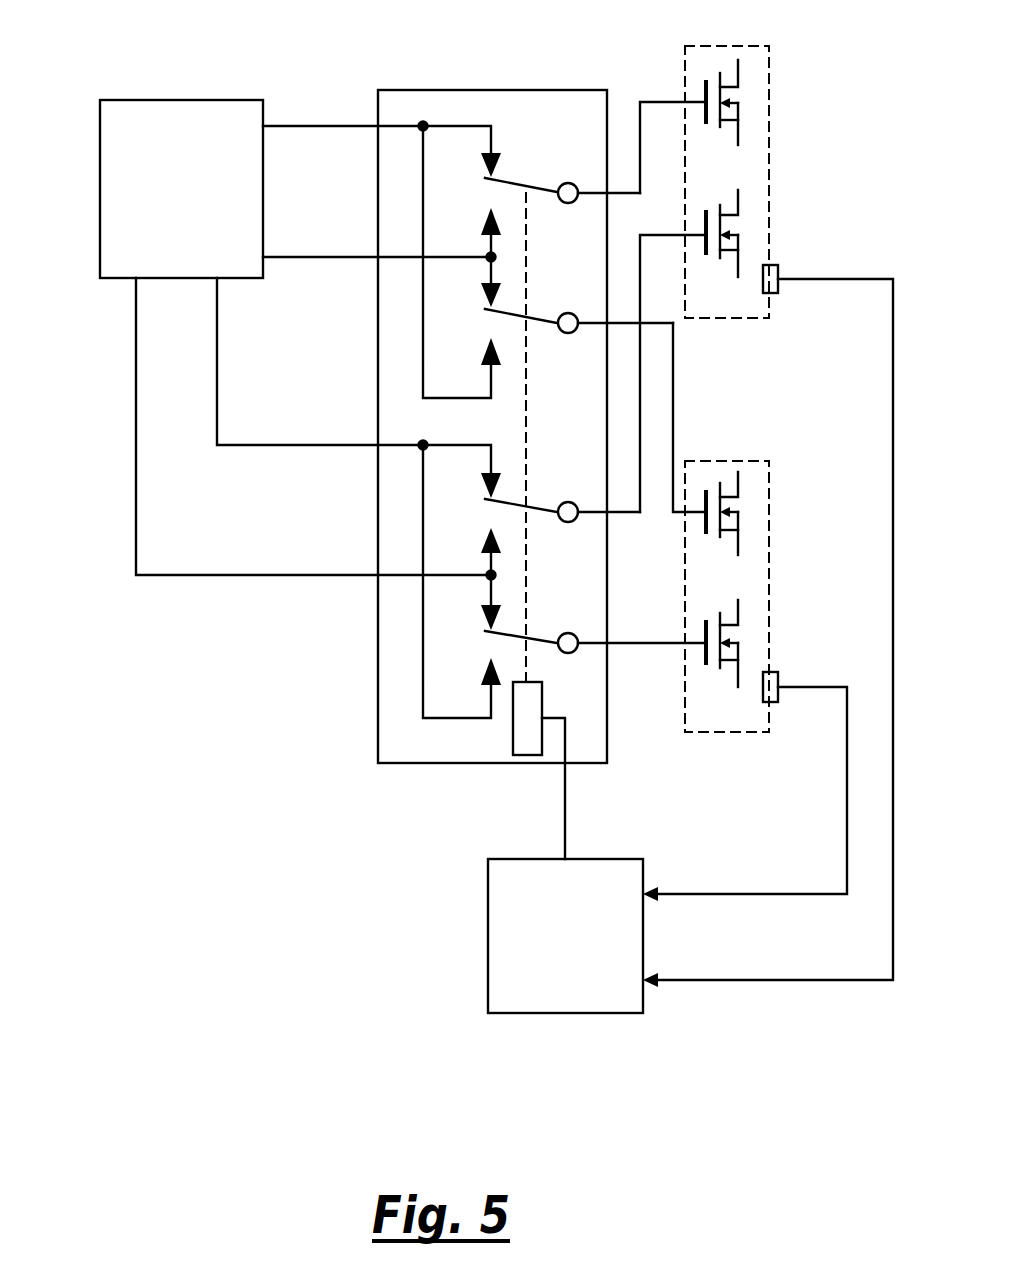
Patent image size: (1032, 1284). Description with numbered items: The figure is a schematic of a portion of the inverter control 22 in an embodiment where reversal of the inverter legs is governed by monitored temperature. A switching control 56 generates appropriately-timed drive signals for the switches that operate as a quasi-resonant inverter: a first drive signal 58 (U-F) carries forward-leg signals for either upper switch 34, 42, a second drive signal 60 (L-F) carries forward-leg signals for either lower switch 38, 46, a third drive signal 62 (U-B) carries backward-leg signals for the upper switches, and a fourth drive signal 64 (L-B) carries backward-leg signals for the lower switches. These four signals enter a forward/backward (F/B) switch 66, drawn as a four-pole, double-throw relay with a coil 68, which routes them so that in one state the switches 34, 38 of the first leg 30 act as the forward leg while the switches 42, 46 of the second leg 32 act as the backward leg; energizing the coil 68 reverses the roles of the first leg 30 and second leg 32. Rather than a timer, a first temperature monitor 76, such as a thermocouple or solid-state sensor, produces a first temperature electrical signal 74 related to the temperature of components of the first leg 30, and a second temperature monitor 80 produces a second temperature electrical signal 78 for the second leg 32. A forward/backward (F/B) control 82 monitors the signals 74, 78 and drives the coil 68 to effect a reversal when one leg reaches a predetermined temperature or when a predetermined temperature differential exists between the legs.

The control 22 is at (233, 40).
The switching control 56 is at (100, 133).
The first drive signal (U-F) 58 is at (341, 126).
The third drive signal (U-B) 62 is at (356, 257).
The second drive signal (L-F) 60 is at (346, 445).
The fourth drive signal (L-B) 64 is at (349, 575).
The forward/backward (F/B) switch 66 is at (378, 660).
The coil 68 is at (544, 698).
The first leg 30 is at (769, 75).
The upper switch of first leg 34 is at (720, 128).
The lower switch of first leg 38 is at (720, 259).
The second leg 32 is at (769, 519).
The upper switch of second leg 42 is at (720, 538).
The lower switch of second leg 46 is at (720, 669).
The first temperature monitor 76 is at (778, 268).
The second temperature monitor 80 is at (778, 675).
The second temperature electrical signal 78 is at (760, 894).
The first temperature electrical signal 74 is at (763, 980).
The forward/backward (F/B) control 82 is at (488, 900).